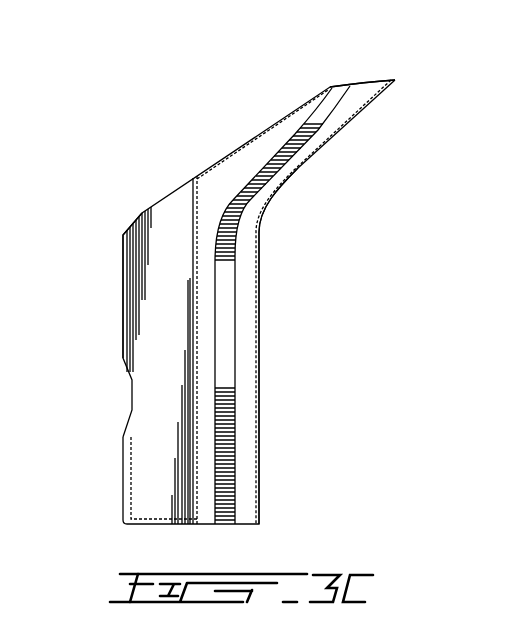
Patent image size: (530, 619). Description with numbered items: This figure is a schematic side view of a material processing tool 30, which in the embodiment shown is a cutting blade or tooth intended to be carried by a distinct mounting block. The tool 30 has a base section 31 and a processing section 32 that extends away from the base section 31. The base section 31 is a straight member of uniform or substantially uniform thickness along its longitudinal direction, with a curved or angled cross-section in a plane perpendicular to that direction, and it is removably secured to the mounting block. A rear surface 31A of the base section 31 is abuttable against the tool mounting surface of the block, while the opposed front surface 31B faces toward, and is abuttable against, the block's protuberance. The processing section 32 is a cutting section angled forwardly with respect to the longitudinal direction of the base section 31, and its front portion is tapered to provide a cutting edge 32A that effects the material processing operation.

The material processing tool 30 is at (80, 188).
The base section 31 is at (222, 475).
The rear surface 31A is at (122, 312).
The front surface 31B is at (258, 387).
The processing section 32 is at (293, 140).
The cutting edge 32A is at (395, 80).